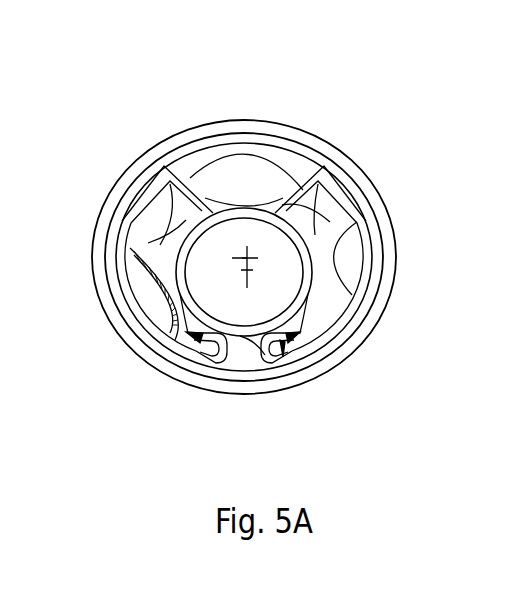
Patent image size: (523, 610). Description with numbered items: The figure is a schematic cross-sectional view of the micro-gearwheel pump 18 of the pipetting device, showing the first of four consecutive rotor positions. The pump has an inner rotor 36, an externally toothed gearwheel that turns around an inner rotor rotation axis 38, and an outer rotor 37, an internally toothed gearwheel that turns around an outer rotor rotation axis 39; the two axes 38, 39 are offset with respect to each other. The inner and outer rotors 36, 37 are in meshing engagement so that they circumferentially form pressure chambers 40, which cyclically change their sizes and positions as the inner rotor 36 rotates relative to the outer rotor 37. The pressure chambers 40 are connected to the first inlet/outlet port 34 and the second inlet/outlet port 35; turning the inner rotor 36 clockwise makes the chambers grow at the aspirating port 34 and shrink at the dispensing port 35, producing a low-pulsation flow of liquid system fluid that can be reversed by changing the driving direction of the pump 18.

The micro-gearwheel pump 18 is at (266, 80).
The first inlet/outlet port 34 is at (195, 358).
The second inlet/outlet port 35 is at (295, 358).
The inner rotor 36 is at (130, 252).
The outer rotor 37 is at (212, 155).
The inner rotor rotation axis 38 is at (248, 270).
The outer rotor rotation axis 39 is at (242, 258).
The pressure chambers 40 is at (270, 163).